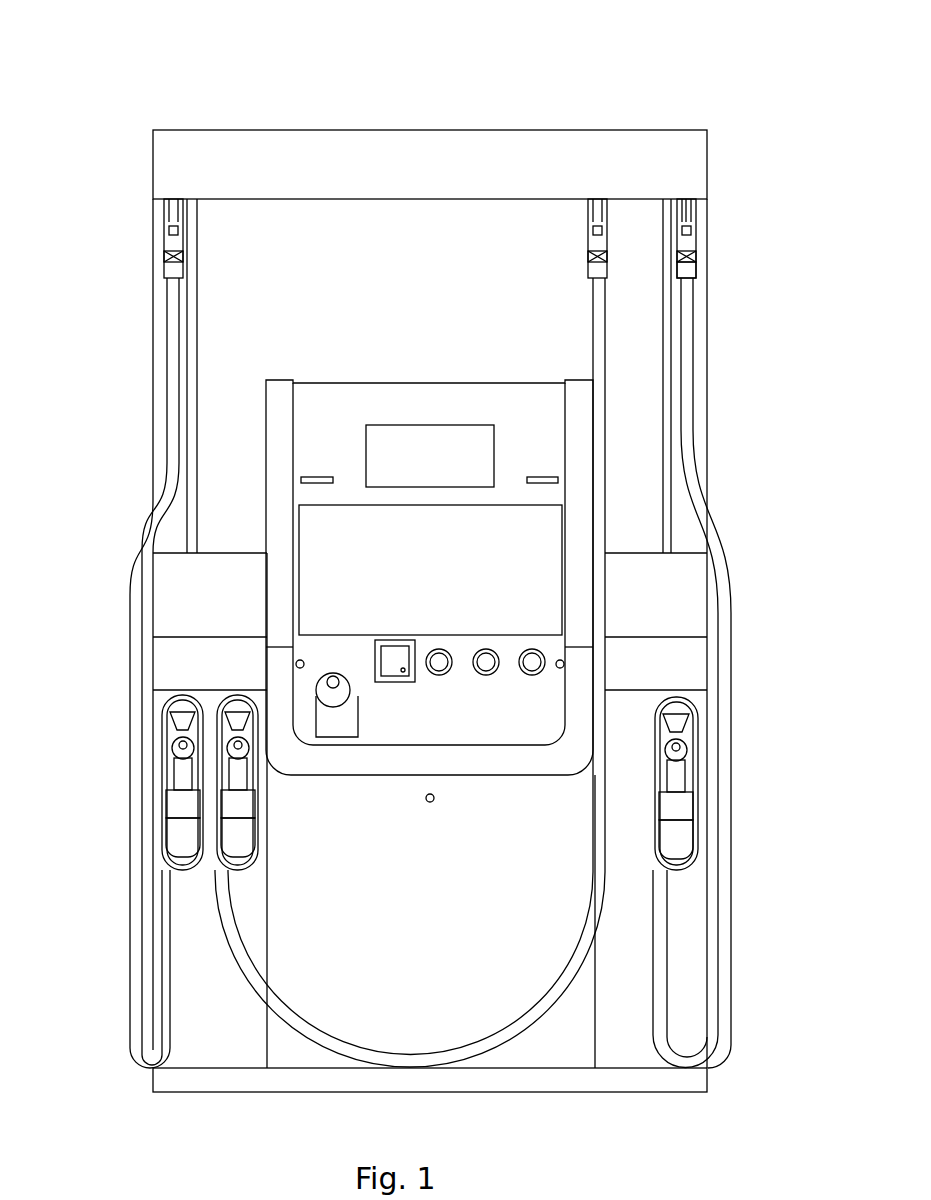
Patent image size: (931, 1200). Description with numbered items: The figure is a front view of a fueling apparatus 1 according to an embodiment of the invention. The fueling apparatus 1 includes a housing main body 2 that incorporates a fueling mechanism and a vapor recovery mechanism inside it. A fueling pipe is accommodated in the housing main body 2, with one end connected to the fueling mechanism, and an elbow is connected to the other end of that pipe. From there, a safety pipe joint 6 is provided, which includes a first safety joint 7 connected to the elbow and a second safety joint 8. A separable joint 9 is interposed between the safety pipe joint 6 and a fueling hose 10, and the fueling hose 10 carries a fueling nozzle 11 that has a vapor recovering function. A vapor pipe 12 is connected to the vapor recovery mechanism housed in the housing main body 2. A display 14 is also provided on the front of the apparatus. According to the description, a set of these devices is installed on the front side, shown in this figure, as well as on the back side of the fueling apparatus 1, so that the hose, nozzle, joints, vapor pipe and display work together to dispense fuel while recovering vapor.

The fueling apparatus 1 is at (425, 24).
The housing main body 2 is at (650, 128).
The safety pipe joint 6 is at (768, 213).
The first safety joint 7 is at (697, 214).
The second safety joint 8 is at (697, 232).
The separable joint 9 is at (697, 258).
The fueling hose 10 is at (722, 537).
The fueling nozzle 11 is at (698, 797).
The vapor pipe 12 is at (698, 209).
The display 14 is at (323, 380).